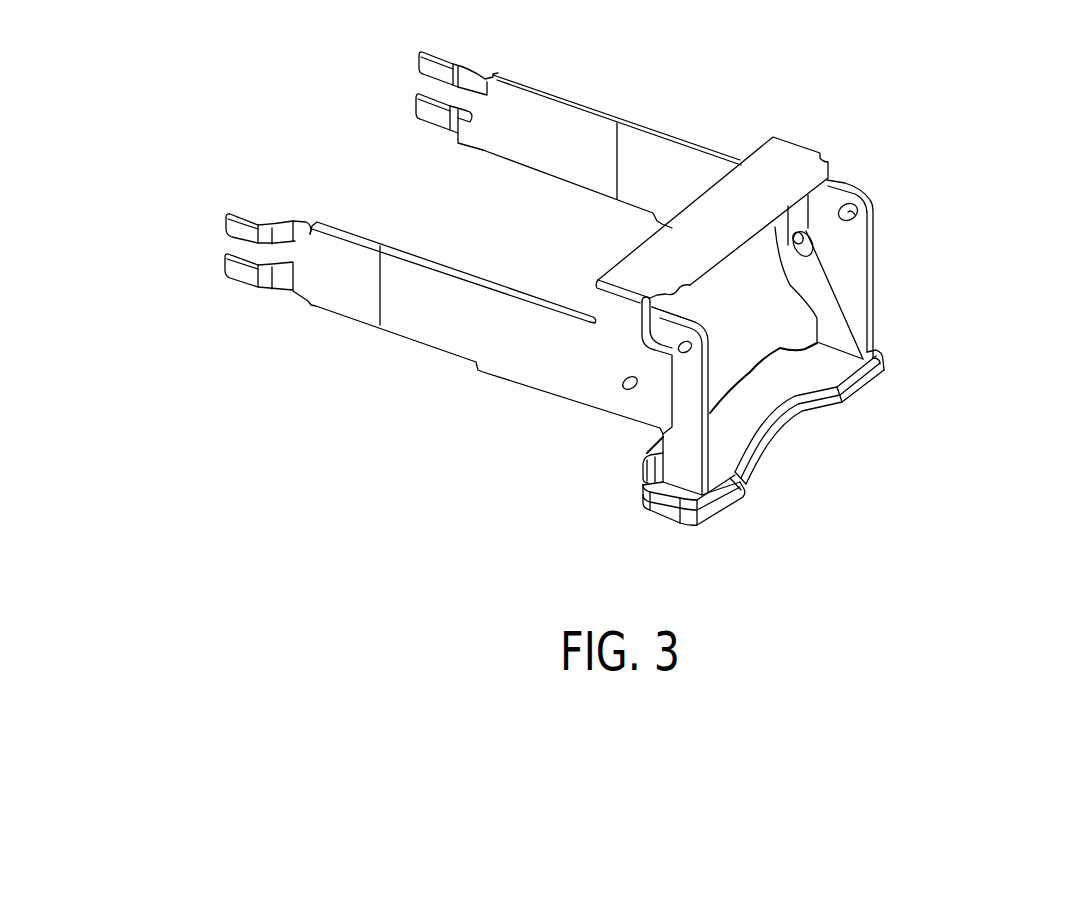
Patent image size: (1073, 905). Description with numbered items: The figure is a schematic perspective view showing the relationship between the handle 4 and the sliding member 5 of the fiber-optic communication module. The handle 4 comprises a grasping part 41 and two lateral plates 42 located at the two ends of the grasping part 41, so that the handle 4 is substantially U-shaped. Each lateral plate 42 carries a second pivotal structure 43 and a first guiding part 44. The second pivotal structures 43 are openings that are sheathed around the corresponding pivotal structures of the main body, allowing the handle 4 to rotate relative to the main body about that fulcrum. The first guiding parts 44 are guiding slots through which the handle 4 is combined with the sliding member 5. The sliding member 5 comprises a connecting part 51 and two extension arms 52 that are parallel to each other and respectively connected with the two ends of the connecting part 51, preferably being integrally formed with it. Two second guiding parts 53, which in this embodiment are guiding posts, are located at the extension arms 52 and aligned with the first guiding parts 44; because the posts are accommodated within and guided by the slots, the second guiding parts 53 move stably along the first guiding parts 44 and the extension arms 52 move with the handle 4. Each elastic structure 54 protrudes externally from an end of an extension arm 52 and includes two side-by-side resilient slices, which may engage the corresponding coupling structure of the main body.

The handle 4 is at (997, 310).
The grasping part 41 is at (757, 405).
The lateral plates 42 is at (850, 294).
The second pivotal structures 43 is at (852, 220).
The first guiding parts 44 is at (873, 374).
The sliding member 5 is at (112, 323).
The connecting part 51 is at (748, 190).
The extension arms 52 is at (537, 128).
The second guiding parts 53 is at (800, 250).
The elastic structures 54 is at (242, 226).